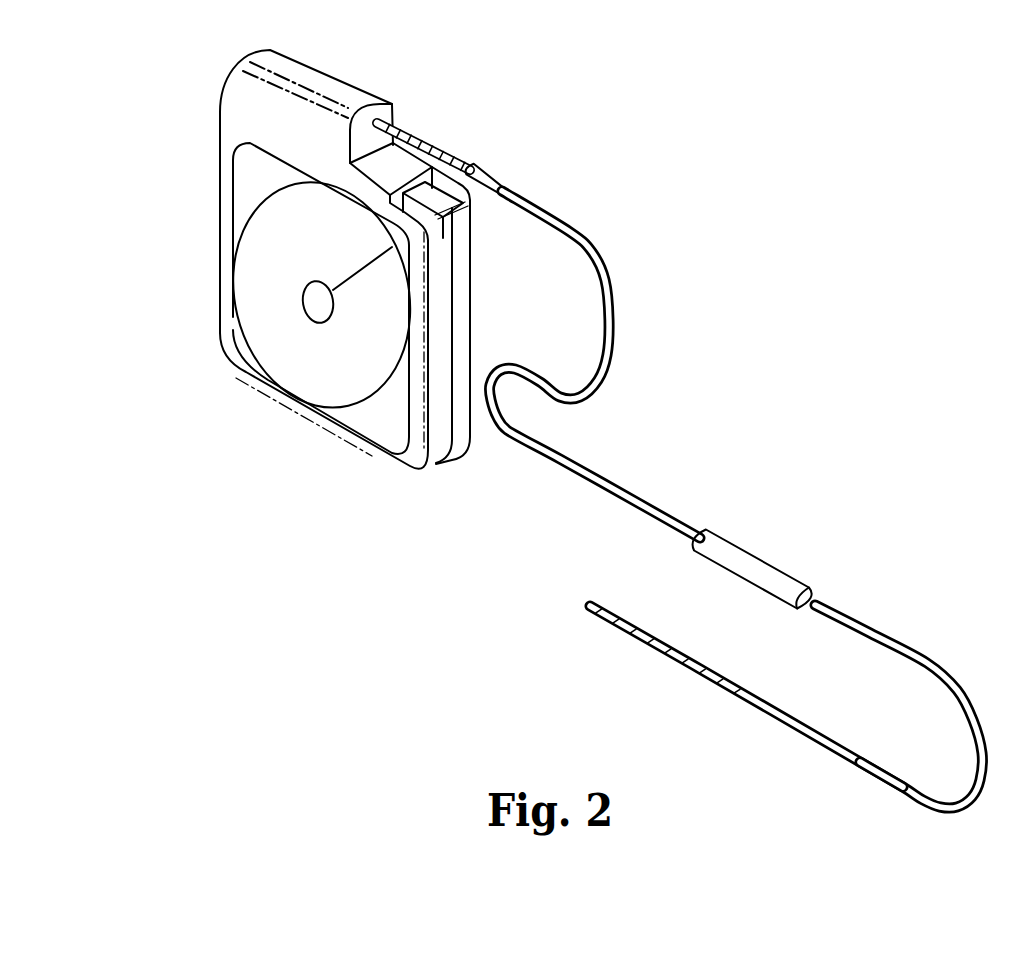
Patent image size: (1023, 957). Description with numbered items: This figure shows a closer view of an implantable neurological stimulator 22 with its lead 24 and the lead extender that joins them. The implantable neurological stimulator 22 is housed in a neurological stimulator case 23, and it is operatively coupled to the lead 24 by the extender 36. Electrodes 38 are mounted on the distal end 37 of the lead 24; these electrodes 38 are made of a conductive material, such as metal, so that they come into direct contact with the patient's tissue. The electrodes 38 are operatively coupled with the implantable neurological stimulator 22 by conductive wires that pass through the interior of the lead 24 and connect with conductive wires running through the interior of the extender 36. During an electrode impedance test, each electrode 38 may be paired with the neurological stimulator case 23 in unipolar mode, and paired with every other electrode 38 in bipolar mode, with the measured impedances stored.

The implantable neurological stimulator 22 is at (510, 137).
The neurological stimulator case 23 is at (315, 425).
The lead 24 is at (930, 663).
The extender 36 is at (618, 487).
The distal end 37 is at (860, 807).
The electrodes 38 is at (718, 693).